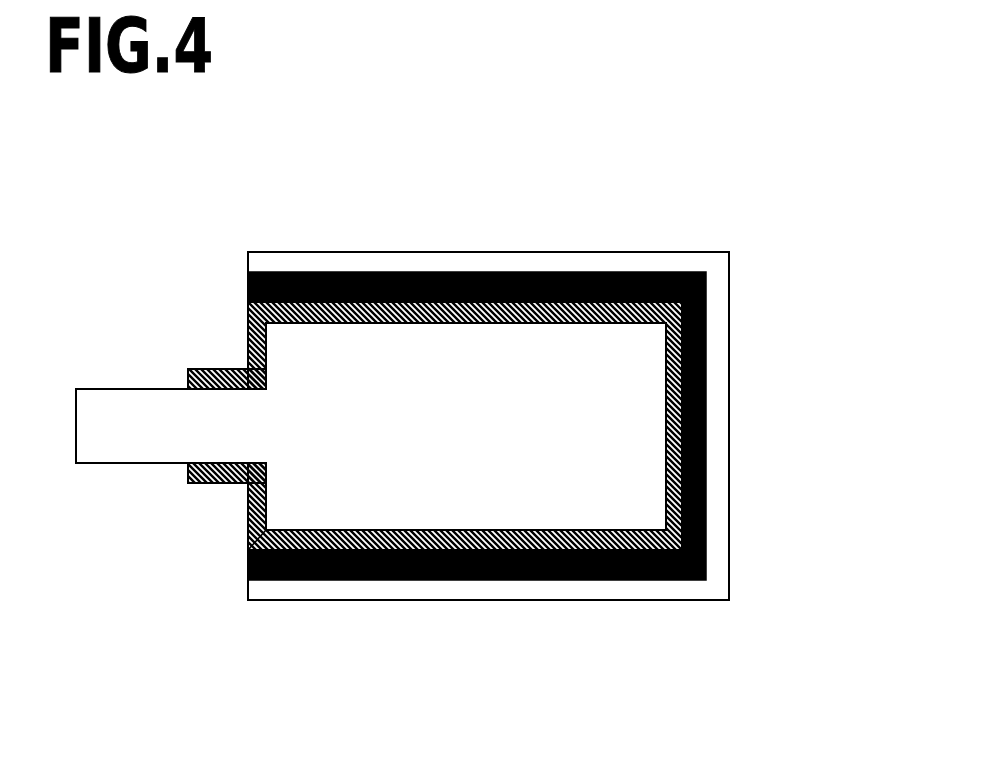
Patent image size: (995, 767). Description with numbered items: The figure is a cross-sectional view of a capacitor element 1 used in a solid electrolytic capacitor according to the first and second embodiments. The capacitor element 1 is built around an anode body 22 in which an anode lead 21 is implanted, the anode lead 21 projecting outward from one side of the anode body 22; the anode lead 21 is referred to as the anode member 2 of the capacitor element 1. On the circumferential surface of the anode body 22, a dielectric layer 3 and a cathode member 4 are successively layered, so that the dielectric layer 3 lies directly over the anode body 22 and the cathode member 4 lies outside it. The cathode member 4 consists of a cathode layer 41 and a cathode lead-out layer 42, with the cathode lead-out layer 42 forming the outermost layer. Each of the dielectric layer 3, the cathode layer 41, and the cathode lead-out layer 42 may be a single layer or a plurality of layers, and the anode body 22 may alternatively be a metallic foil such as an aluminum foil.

The capacitor element 1 is at (446, 499).
The anode member 2 is at (371, 535).
The anode lead 21 is at (247, 425).
The anode body 22 is at (339, 488).
The dielectric layer 3 is at (438, 542).
The cathode member 4 is at (488, 499).
The cathode layer 41 is at (620, 680).
The cathode lead-out layer 42 is at (568, 587).